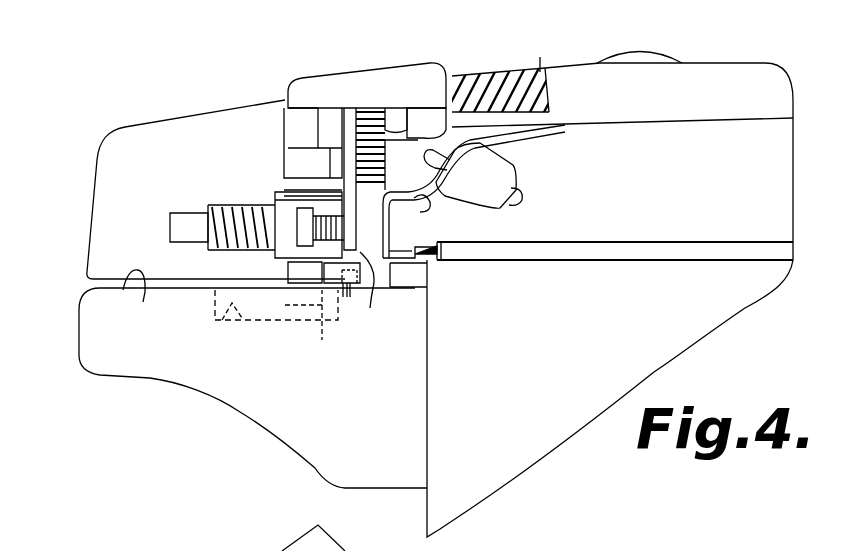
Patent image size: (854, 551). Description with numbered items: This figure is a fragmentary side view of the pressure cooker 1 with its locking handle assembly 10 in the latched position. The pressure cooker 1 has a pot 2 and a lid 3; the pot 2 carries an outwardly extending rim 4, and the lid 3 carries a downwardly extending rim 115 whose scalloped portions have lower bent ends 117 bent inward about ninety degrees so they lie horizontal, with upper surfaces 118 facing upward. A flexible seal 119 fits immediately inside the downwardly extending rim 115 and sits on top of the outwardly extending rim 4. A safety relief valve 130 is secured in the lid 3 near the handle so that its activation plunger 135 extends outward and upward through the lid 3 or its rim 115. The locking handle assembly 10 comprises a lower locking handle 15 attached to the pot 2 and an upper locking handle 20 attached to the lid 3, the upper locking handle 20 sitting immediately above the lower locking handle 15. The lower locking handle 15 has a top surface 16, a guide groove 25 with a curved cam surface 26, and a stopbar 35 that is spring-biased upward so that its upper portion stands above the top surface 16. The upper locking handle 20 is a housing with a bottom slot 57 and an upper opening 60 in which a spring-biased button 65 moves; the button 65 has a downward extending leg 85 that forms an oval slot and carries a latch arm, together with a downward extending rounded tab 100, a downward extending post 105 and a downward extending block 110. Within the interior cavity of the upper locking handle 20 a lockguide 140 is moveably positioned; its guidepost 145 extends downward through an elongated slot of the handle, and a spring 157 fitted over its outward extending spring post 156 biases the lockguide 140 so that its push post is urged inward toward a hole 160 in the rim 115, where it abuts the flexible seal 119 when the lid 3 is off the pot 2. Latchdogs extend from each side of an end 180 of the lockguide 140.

The pressure cooker 1 is at (750, 30).
The pot 2 is at (425, 394).
The lid 3 is at (704, 118).
The outwardly extending rim 4 is at (536, 262).
The locking handle assembly 10 is at (170, 88).
The lower locking handle 15 is at (79, 337).
The top surface 16 is at (134, 298).
The upper locking handle 20 is at (90, 186).
The guide groove 25 is at (276, 323).
The cam surface 26 is at (303, 325).
The stopbar 35 is at (347, 293).
The bottom slot 57 is at (343, 297).
The upper opening 60 is at (285, 126).
The spring-biased button 65 is at (365, 78).
The downward extending leg 85 is at (330, 162).
The downward extending rounded tab 100 is at (402, 110).
The downward extending post 105 is at (384, 110).
The downward extending block 110 is at (332, 108).
The downwardly extending rim 115 is at (403, 165).
The lower bent ends 117 is at (393, 285).
The upper surfaces 118 is at (604, 251).
The flexible seal 119 is at (428, 210).
The safety relief valve 130 is at (503, 166).
The activation plunger 135 is at (473, 175).
The lockguide 140 is at (278, 192).
The guidepost 145 is at (288, 268).
The spring post 156 is at (185, 212).
The spring 157 is at (212, 246).
The hole 160 is at (410, 229).
The end 180 is at (356, 284).